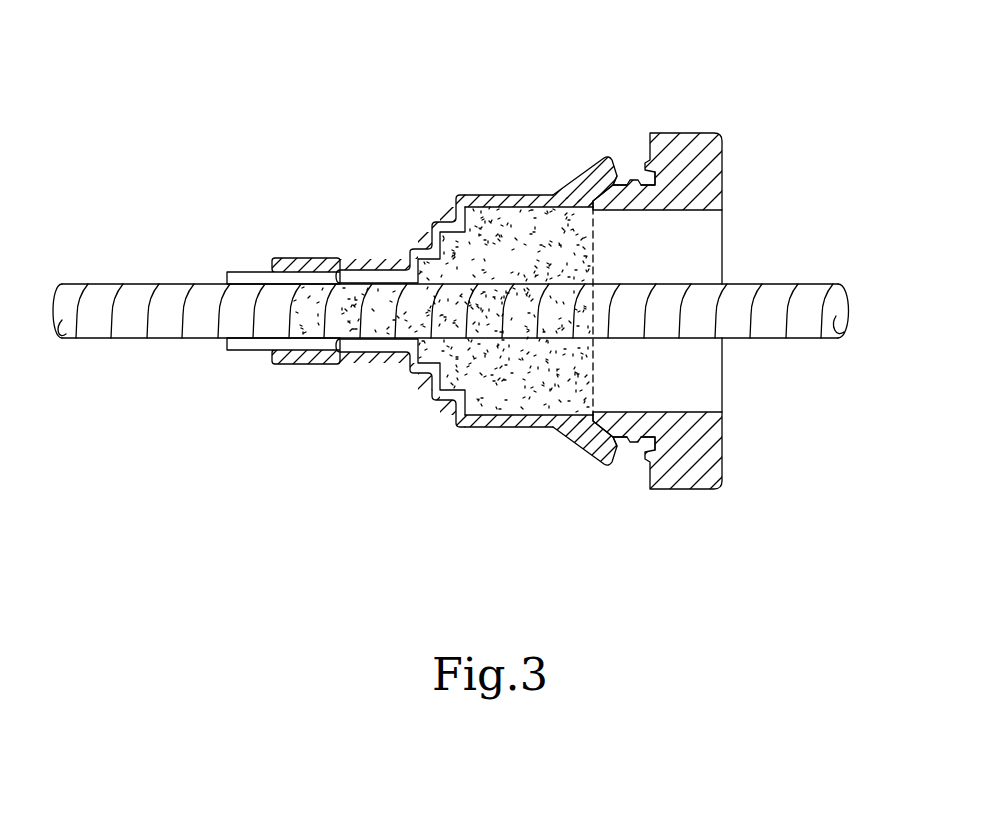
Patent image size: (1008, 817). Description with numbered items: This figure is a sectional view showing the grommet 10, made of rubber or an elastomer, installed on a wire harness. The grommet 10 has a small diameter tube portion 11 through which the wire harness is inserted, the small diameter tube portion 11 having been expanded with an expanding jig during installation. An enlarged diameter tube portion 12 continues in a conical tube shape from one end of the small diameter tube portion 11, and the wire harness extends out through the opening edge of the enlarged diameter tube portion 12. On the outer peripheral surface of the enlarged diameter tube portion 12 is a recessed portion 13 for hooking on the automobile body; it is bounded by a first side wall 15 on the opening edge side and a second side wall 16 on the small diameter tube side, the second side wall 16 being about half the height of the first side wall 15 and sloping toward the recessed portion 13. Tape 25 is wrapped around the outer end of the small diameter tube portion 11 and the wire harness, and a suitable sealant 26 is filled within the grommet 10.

The grommet 10 is at (728, 180).
The small diameter tube portion 11 is at (368, 355).
The enlarged diameter tube portion 12 is at (530, 427).
The recessed portion 13 is at (633, 177).
The first side wall 15 is at (647, 169).
The second side wall 16 is at (600, 168).
The tape 25 is at (310, 258).
The sealant 26 is at (492, 428).